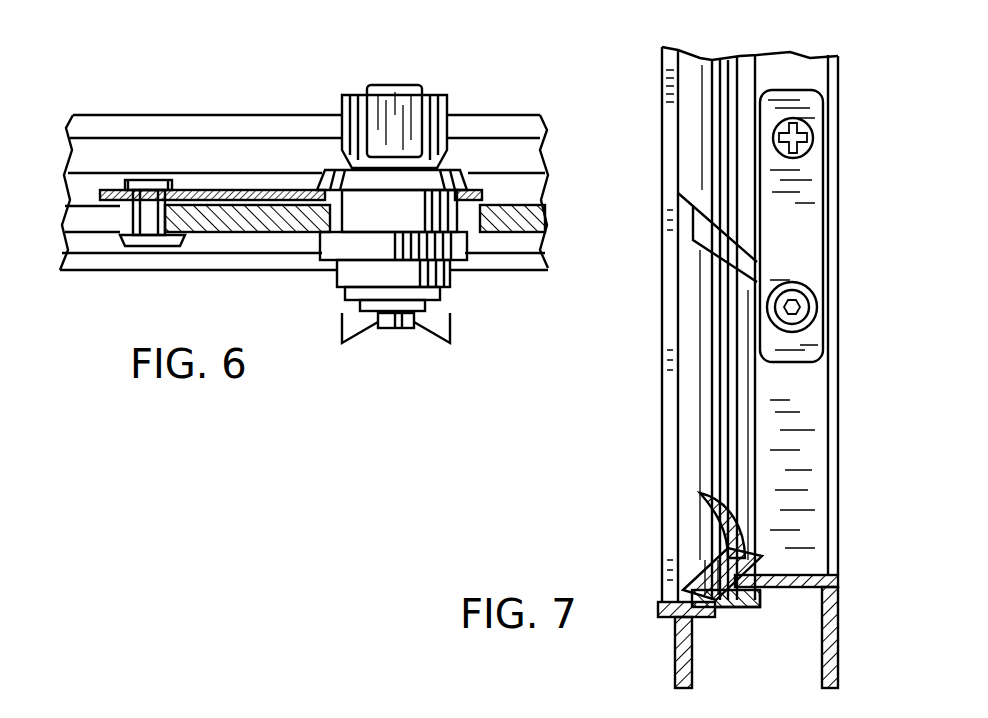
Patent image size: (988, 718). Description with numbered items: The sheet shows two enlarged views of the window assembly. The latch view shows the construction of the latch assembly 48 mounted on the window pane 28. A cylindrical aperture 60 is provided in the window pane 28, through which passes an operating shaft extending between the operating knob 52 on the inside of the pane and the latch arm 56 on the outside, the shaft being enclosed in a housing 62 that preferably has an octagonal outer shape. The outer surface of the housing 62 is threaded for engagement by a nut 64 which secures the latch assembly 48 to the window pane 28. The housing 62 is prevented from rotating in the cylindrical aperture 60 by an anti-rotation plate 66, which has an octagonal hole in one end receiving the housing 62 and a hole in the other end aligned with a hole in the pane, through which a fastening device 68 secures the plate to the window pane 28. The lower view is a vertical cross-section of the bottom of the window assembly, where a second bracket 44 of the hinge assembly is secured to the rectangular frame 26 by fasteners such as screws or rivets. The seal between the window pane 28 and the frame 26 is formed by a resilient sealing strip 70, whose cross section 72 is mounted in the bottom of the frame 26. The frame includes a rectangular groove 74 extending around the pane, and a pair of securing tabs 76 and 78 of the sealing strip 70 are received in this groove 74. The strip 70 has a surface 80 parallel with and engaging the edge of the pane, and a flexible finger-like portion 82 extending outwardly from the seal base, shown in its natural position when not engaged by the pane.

In FIG. 7, the rectangular frame 26 is at (846, 612).
In FIG. 6, the window pane 28 is at (540, 211).
In FIG. 7, the second bracket 44 is at (818, 232).
In FIG. 6, the latch assembly 48 is at (455, 92).
In FIG. 6, the operating knob 52 is at (372, 88).
In FIG. 6, the latch arm 56 is at (430, 296).
In FIG. 6, the cylindrical aperture 60 is at (488, 252).
In FIG. 6, the housing 62 is at (330, 222).
In FIG. 6, the nut 64 is at (345, 265).
In FIG. 6, the anti-rotation plate 66 is at (215, 195).
In FIG. 6, the fastening device 68 is at (150, 180).
In FIG. 7, the resilient sealing strip 70 is at (690, 80).
In FIG. 7, the cross section 72 is at (757, 548).
In FIG. 7, the rectangular groove 74 is at (745, 597).
In FIG. 7, the securing tab 76 is at (708, 606).
In FIG. 7, the securing tab 78 is at (735, 605).
In FIG. 7, the surface 80 is at (710, 548).
In FIG. 7, the finger-like portion 82 is at (700, 493).